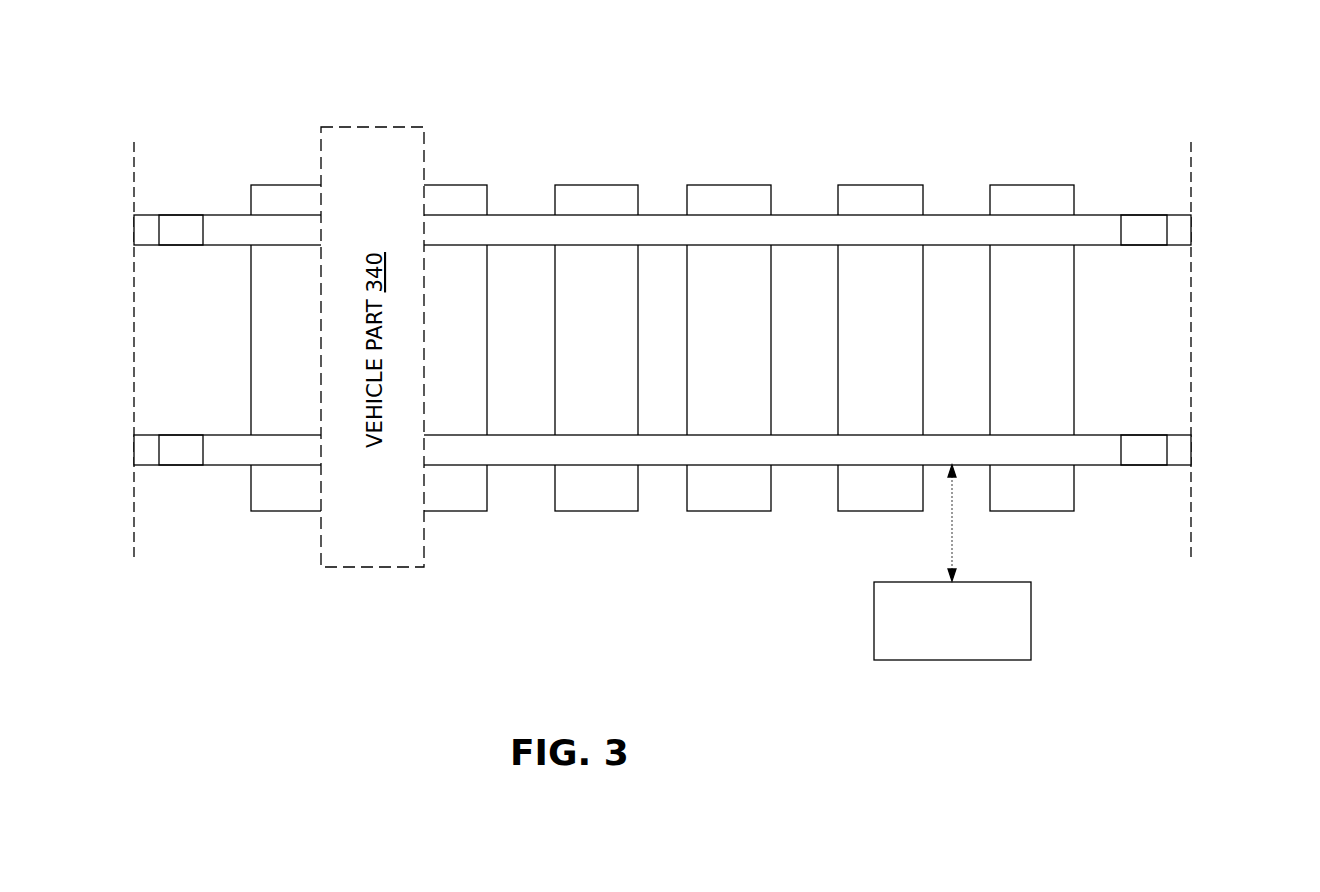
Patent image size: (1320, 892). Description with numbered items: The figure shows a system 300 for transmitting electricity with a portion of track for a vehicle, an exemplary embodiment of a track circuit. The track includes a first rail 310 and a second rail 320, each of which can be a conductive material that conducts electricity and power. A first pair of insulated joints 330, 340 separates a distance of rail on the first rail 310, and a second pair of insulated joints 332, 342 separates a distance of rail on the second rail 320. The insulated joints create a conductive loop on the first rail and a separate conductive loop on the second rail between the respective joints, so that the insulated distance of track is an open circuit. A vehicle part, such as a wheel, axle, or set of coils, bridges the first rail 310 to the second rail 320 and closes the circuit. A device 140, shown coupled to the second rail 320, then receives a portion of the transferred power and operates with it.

The system 300 is at (1090, 32).
The first rail 310 is at (517, 228).
The second rail 320 is at (515, 454).
The insulated joint 330 is at (175, 230).
The insulated joint 332 is at (175, 452).
The insulated joint 340 is at (1147, 232).
The insulated joint 342 is at (1143, 450).
The device 140 is at (1031, 618).